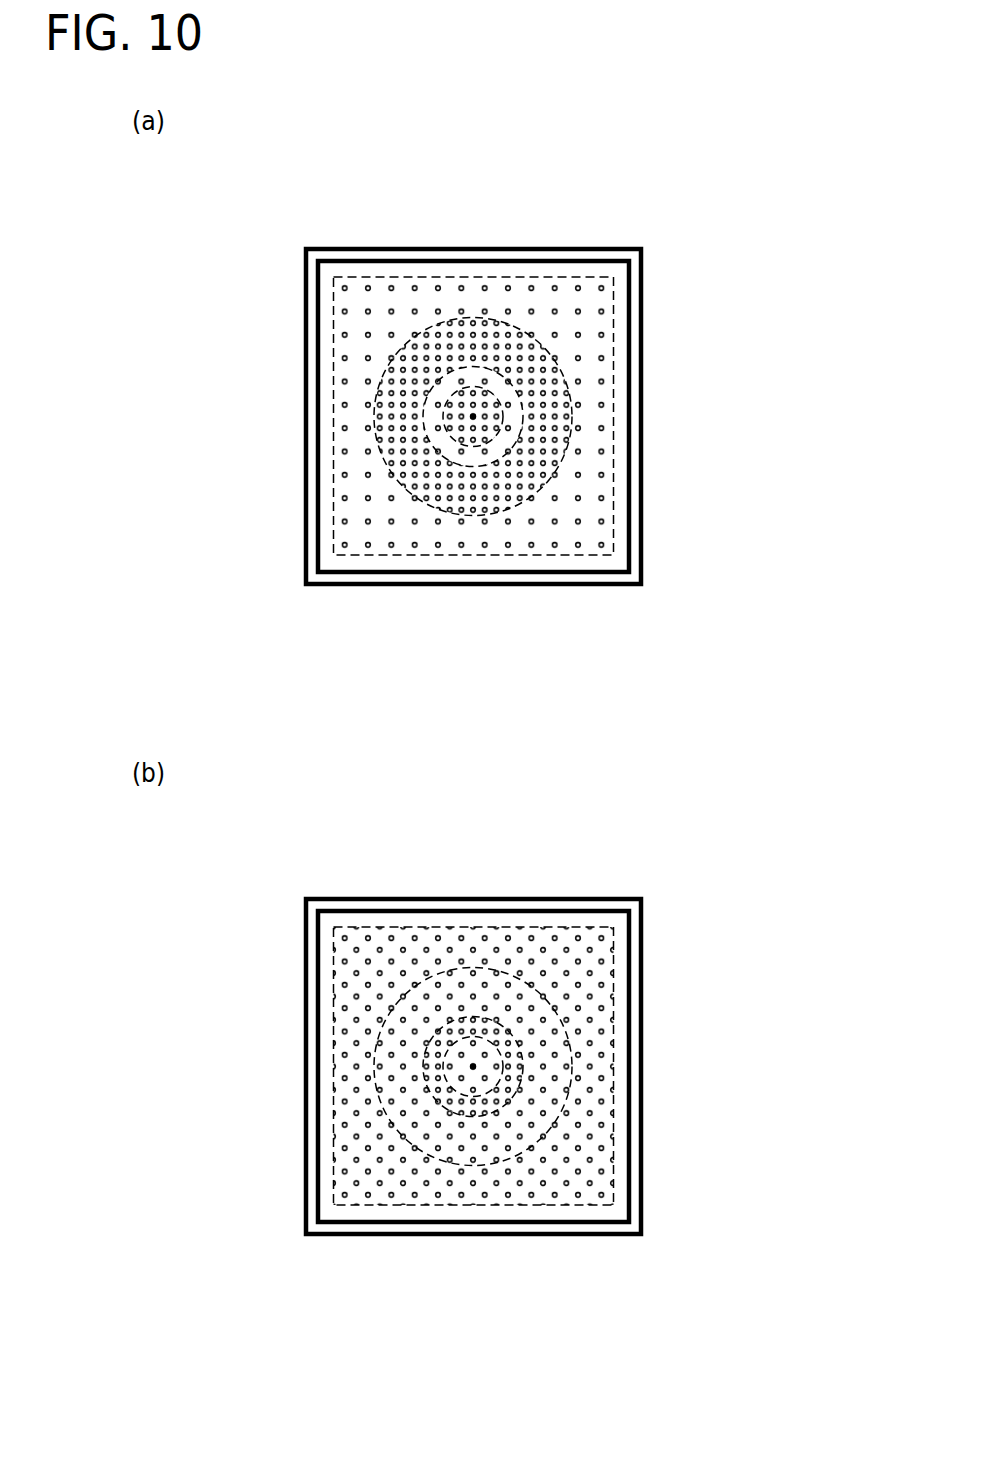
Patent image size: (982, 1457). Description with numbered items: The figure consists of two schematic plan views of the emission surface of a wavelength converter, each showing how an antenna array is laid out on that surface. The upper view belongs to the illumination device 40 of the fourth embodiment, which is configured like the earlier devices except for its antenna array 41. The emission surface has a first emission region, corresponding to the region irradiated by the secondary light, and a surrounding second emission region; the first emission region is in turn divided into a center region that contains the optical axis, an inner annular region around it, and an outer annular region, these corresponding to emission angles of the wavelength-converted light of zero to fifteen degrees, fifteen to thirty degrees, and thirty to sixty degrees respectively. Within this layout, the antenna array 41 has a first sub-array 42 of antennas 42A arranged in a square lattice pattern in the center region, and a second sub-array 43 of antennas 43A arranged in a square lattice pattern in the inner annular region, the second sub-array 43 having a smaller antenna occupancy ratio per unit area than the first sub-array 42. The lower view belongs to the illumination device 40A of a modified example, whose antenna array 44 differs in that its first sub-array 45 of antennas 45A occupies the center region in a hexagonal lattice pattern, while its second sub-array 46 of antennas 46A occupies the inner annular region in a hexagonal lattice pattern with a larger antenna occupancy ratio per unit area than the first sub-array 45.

The illumination device 40 is at (290, 208).
The illumination device 40A is at (290, 857).
The antenna array 41 is at (778, 340).
The first sub-array 42 is at (732, 313).
The antenna 42A is at (485, 404).
The second sub-array 43 is at (732, 452).
The antenna 43A is at (578, 452).
The antenna array 44 is at (780, 992).
The first sub-array 45 is at (733, 962).
The antenna 45A is at (487, 1053).
The second sub-array 46 is at (733, 1100).
The antenna 46A is at (527, 1078).